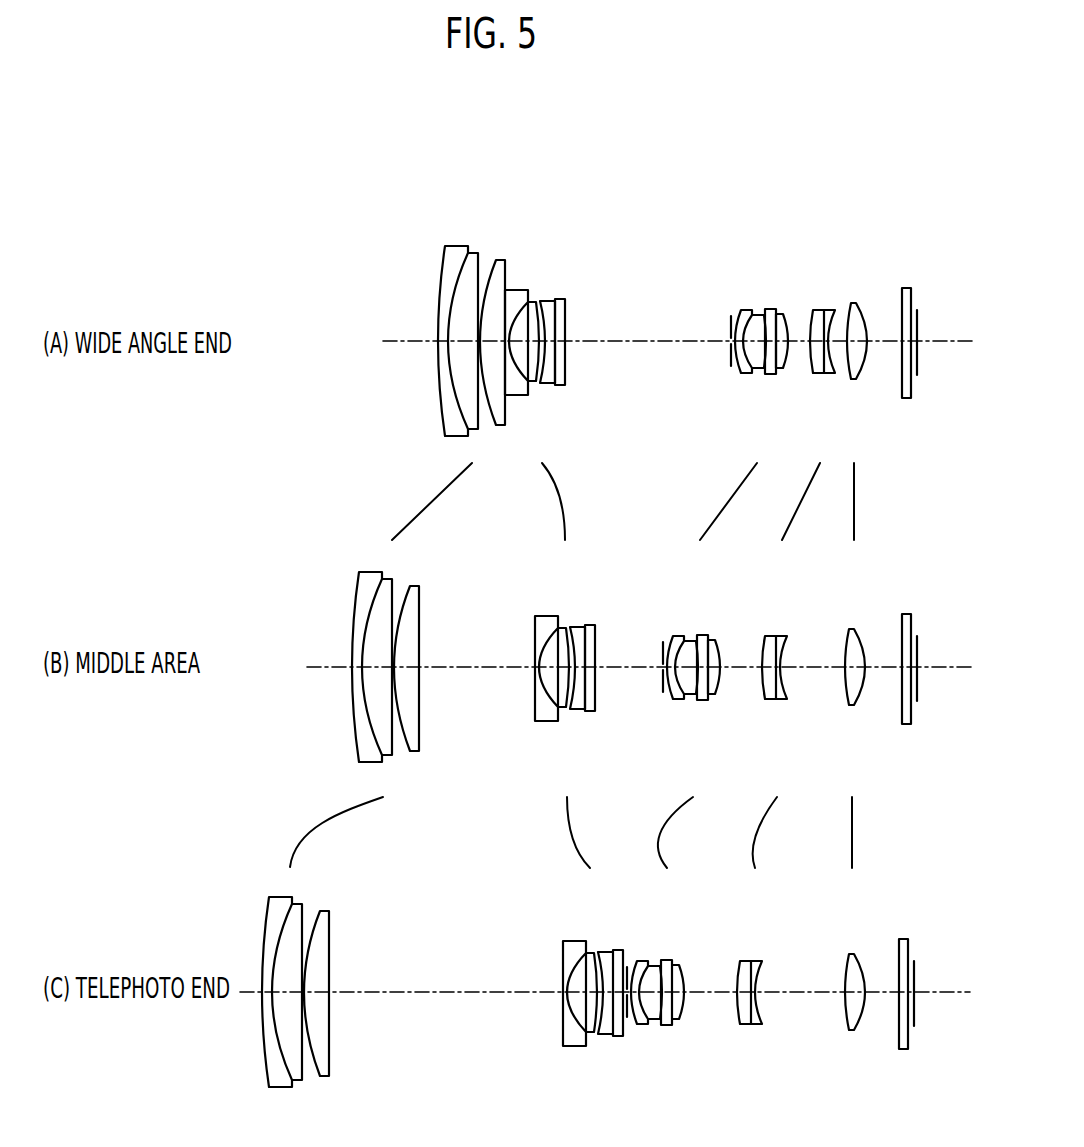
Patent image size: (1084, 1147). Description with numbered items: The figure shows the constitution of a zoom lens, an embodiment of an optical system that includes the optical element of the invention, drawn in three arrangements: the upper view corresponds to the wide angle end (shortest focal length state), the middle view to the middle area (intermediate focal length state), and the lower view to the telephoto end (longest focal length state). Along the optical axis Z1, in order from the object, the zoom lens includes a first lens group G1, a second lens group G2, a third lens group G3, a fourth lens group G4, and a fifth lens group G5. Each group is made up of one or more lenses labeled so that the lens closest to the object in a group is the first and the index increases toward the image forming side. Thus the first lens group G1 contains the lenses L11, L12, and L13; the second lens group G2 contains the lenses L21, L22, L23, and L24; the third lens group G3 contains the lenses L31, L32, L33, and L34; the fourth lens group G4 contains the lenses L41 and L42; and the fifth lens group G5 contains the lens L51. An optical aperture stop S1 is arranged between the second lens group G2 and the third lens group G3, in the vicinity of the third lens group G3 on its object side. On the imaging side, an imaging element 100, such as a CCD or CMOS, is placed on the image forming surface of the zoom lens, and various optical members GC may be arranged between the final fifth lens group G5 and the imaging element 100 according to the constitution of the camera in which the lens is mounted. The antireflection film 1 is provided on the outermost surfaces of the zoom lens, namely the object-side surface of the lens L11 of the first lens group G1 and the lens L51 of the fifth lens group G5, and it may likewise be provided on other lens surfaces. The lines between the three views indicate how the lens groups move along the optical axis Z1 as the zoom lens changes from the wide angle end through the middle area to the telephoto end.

The antireflection film 1 is at (442, 283).
The optical axis Z1 is at (398, 349).
The first lens group G1 is at (500, 170).
The second lens group G2 is at (565, 170).
The third lens group G3 is at (790, 170).
The fourth lens group G4 is at (837, 170).
The fifth lens group G5 is at (870, 170).
The first lens of the first lens group L11 is at (450, 248).
The second lens of the first lens group L12 is at (469, 253).
The third lens of the first lens group L13 is at (498, 259).
The first lens of the second lens group L21 is at (512, 290).
The second lens of the second lens group L22 is at (532, 302).
The third lens of the second lens group L23 is at (547, 301).
The fourth lens of the second lens group L24 is at (560, 300).
The optical aperture stop S1 is at (727, 328).
The first lens of the third lens group L31 is at (747, 310).
The second lens of the third lens group L32 is at (758, 310).
The third lens of the third lens group L33 is at (770, 309).
The fourth lens of the third lens group L34 is at (807, 290).
The first lens of the fourth lens group L41 is at (815, 310).
The second lens of the fourth lens group L42 is at (828, 310).
The lens of the fifth lens group L51 is at (857, 304).
The optical members GC is at (907, 288).
The imaging element 100 is at (919, 310).